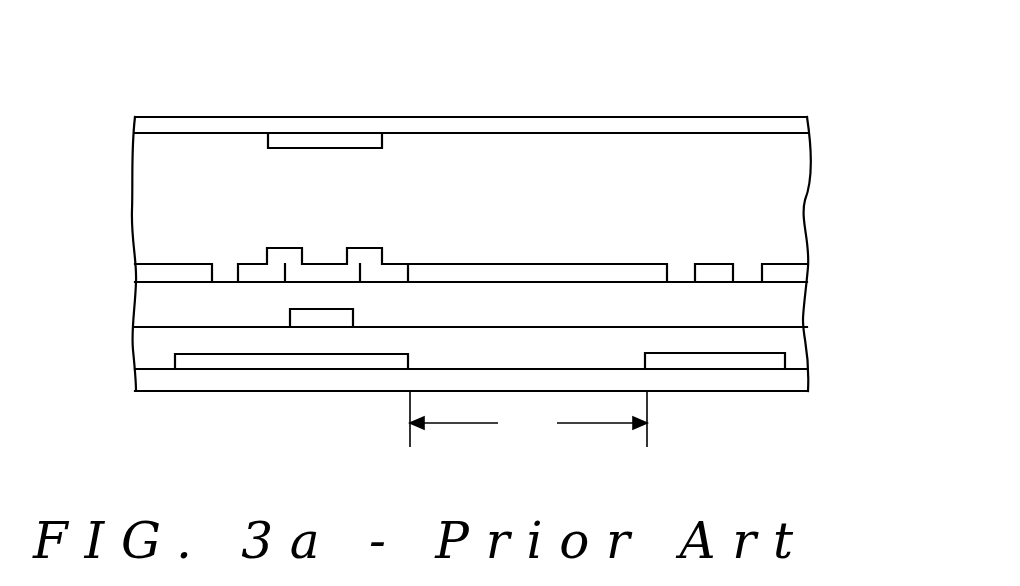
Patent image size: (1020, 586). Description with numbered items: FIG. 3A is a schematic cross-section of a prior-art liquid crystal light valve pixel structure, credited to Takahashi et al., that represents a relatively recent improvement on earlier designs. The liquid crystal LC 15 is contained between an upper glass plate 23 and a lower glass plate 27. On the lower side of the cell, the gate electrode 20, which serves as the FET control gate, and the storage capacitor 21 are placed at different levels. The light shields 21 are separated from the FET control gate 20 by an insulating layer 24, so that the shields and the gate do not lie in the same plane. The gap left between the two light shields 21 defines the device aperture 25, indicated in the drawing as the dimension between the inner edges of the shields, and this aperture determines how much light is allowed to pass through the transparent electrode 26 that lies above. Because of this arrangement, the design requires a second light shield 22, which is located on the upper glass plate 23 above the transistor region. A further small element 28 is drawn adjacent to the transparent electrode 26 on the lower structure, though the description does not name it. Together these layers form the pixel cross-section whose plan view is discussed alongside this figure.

The LC 15 is at (783, 163).
The gate electrode 20 is at (310, 314).
The light shields 21 is at (297, 363).
The second light shield 22 is at (326, 138).
The upper glass plate 23 is at (444, 121).
The insulating layer 24 is at (158, 354).
The device aperture 25 is at (528, 419).
The transparent electrode 26 is at (646, 270).
The lower glass plate 27 is at (792, 378).
The storage electrode 28 is at (723, 270).